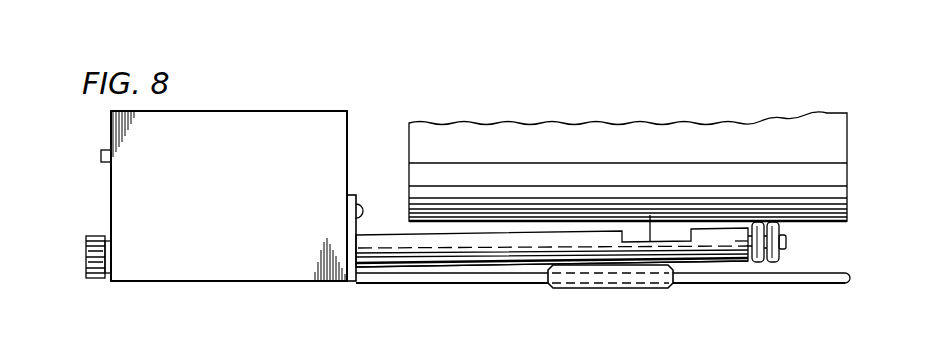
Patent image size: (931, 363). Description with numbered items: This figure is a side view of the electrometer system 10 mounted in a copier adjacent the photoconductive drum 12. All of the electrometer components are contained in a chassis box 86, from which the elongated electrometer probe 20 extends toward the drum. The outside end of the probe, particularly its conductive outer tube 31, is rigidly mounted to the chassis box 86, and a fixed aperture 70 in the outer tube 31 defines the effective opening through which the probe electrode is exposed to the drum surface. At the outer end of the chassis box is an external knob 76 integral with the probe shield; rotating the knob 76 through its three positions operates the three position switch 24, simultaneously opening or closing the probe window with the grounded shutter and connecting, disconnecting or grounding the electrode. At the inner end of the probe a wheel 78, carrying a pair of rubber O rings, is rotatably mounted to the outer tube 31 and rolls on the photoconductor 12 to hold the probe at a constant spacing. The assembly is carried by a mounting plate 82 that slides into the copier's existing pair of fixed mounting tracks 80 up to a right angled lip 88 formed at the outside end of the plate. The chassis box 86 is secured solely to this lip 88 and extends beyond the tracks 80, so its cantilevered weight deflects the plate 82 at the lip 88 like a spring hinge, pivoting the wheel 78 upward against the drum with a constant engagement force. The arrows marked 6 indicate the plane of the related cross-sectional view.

The electrometer system 10 is at (491, 113).
The photoconductive drum 12 is at (773, 129).
The electrometer probe 20 is at (387, 246).
The three position switch 24 is at (86, 238).
The outer tube 31 is at (408, 245).
The fixed aperture 70 is at (686, 240).
The external knob 76 is at (90, 279).
The wheel 78 is at (788, 254).
The mounting tracks 80 is at (576, 288).
The mounting plate 82 is at (477, 277).
The chassis box 86 is at (259, 128).
The right angled lip 88 is at (353, 280).
The section line 6- 6 is at (648, 190).